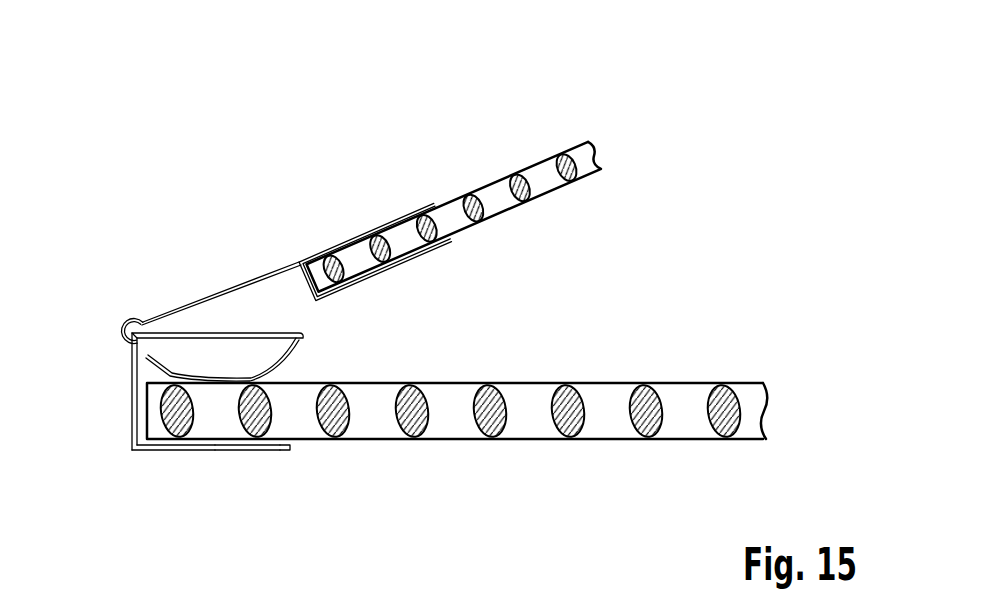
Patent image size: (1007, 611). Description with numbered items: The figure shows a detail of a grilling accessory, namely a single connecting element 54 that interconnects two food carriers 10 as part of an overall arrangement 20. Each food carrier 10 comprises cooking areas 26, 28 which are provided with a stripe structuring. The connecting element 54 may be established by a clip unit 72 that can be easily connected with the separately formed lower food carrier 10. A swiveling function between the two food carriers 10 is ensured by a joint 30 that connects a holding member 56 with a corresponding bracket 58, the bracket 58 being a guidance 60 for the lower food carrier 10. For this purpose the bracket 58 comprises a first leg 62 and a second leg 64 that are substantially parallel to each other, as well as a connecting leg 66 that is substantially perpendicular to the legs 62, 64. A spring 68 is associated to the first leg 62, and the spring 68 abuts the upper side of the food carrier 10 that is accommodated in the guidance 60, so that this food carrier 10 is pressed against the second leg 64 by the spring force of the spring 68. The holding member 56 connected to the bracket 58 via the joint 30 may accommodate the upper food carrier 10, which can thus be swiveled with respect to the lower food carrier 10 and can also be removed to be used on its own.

The food carrier 10 is at (448, 193).
The heating device 20 is at (282, 152).
The cooking area 26 is at (466, 249).
The cooking area 28 is at (535, 137).
The joint 30 is at (127, 321).
The connecting element 54 is at (166, 465).
The holding member 56 is at (352, 235).
The bracket 58 is at (121, 426).
The guidance 60 is at (307, 457).
The first leg 62 is at (200, 337).
The second leg 64 is at (220, 452).
The connecting leg 66 is at (132, 373).
The spring 68 is at (170, 368).
The clip unit 72 is at (231, 270).